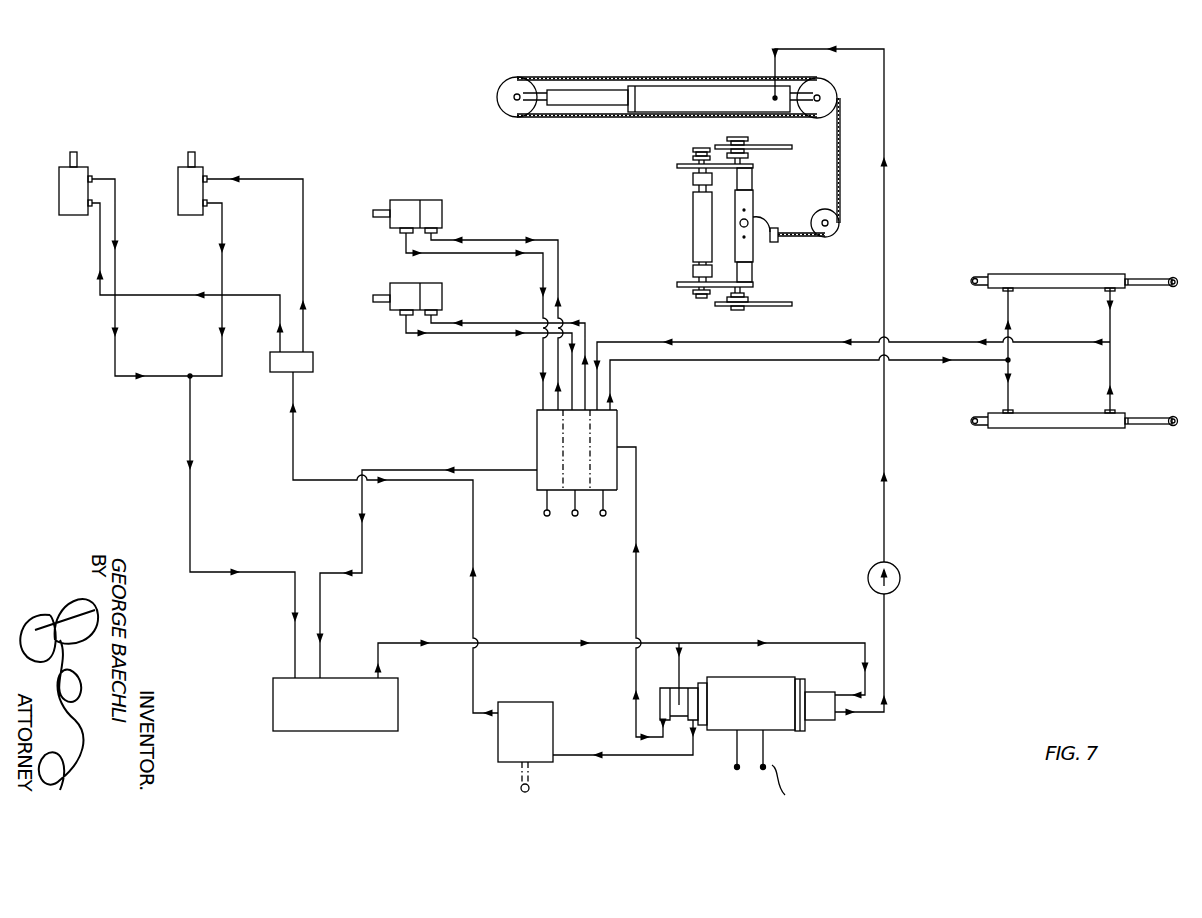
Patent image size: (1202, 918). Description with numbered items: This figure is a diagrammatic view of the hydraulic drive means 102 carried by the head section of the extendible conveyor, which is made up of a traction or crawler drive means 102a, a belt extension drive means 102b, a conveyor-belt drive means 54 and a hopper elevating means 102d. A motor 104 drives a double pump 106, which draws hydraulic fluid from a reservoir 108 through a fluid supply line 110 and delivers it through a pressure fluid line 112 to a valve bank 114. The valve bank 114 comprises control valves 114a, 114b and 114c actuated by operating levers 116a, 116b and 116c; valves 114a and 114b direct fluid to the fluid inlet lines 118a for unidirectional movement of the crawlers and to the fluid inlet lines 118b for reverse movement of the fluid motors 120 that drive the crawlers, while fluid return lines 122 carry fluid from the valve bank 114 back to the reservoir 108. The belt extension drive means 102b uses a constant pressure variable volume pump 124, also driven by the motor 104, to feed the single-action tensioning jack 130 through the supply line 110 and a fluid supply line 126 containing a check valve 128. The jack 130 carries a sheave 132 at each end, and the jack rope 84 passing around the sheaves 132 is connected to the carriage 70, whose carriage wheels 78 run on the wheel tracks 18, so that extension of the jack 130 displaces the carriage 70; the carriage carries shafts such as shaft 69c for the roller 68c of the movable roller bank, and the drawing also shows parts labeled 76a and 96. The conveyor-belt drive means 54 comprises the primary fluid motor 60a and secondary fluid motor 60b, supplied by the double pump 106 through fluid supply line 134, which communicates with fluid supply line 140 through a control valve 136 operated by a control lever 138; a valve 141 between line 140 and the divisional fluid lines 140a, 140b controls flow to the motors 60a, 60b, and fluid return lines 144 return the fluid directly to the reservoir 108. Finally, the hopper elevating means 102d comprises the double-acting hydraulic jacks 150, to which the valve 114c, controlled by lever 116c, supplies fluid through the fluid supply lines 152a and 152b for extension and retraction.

The conveyor-belt drive means 54 is at (140, 132).
The primary fluid motor 60a is at (58, 168).
The secondary fluid motor 60b is at (203, 170).
The fluid return lines 144 is at (120, 197).
The divisional fluid line 140a is at (303, 178).
The divisional fluid line 140b is at (117, 240).
The fluid supply line 140 is at (295, 420).
The valve 141 is at (313, 372).
The reservoir 108 is at (367, 722).
The fluid return lines 122 is at (362, 468).
The fluid supply line 110 is at (407, 643).
The control valve 136 is at (498, 730).
The control lever 138 is at (521, 790).
The fluid supply line 134 is at (655, 756).
The pressure fluid line 112 is at (637, 445).
The double pump 106 is at (680, 686).
The motor 104 is at (787, 722).
The constant pressure variable volume pump 124 is at (830, 713).
The fluid supply line 126 is at (884, 665).
The check valve 128 is at (900, 578).
The valve bank 114 is at (527, 406).
The control valve 114a is at (543, 430).
The control valve 114b is at (575, 457).
The control valve 114c is at (617, 420).
The operating lever 116a is at (545, 513).
The operating lever 116b is at (575, 516).
The control lever 116c is at (605, 518).
The fluid motors 120 is at (443, 223).
The fluid inlet lines 118a is at (560, 258).
The fluid inlet lines 118b is at (543, 283).
The traction or crawler drive means 102a is at (512, 219).
The carriage wheels 78 is at (730, 137).
The wheel tracks 18 is at (805, 128).
The adjusting screw 96 is at (678, 310).
The roller 68c is at (693, 207).
The shaft 69c is at (693, 270).
The carriage 76a is at (753, 200).
The carriage 70 is at (759, 280).
The belt extension drive means 102b is at (533, 66).
The sheave 132 is at (503, 88).
The jack rope 84 is at (605, 117).
The single-action hydraulic jack 130 is at (658, 92).
The hopper elevating means 102d is at (1072, 238).
The double-acting hydraulic jacks 150 is at (1095, 273).
The fluid supply line 152a is at (1010, 303).
The fluid supply line 152b is at (798, 342).
The drive means 102 is at (1010, 85).